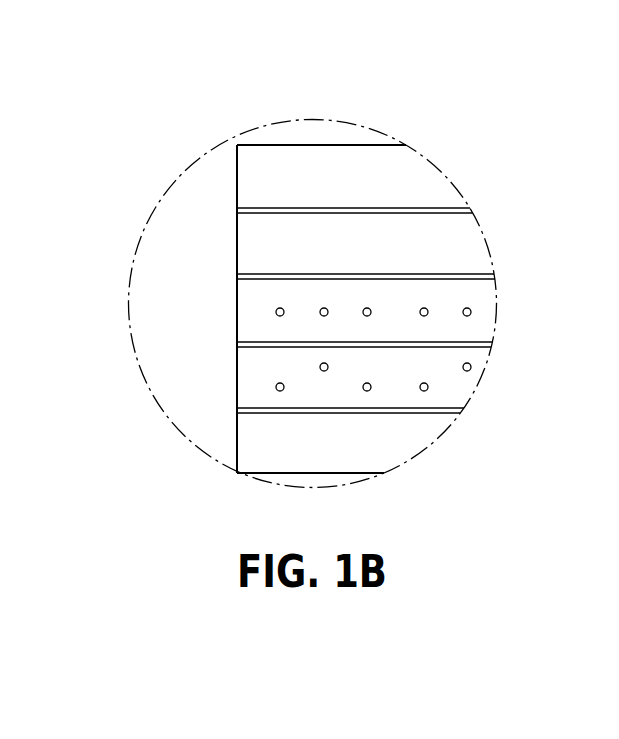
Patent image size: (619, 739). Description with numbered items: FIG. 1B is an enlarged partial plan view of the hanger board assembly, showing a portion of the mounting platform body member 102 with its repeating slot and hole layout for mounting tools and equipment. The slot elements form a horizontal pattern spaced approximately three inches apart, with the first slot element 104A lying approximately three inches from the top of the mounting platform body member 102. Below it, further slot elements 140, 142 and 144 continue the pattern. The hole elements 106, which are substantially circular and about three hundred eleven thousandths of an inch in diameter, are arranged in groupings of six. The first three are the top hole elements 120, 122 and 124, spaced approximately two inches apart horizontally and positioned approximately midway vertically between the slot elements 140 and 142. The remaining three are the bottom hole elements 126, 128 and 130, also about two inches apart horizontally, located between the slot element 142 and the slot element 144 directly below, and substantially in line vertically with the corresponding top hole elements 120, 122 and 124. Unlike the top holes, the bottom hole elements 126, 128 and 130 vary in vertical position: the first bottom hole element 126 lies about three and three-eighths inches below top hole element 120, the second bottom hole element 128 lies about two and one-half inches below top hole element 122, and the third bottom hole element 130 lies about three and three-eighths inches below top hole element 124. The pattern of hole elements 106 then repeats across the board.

The mounting platform body member 102 is at (422, 190).
The first slot element 104A is at (458, 209).
The hole elements 106 is at (473, 312).
The top hole element 120 is at (279, 294).
The top hole element 122 is at (323, 294).
The top hole element 124 is at (368, 294).
The bottom hole element 126 is at (262, 388).
The bottom hole element 128 is at (323, 385).
The bottom hole element 130 is at (368, 405).
The slot element 140 is at (485, 277).
The slot element 142 is at (482, 343).
The slot element 144 is at (455, 408).